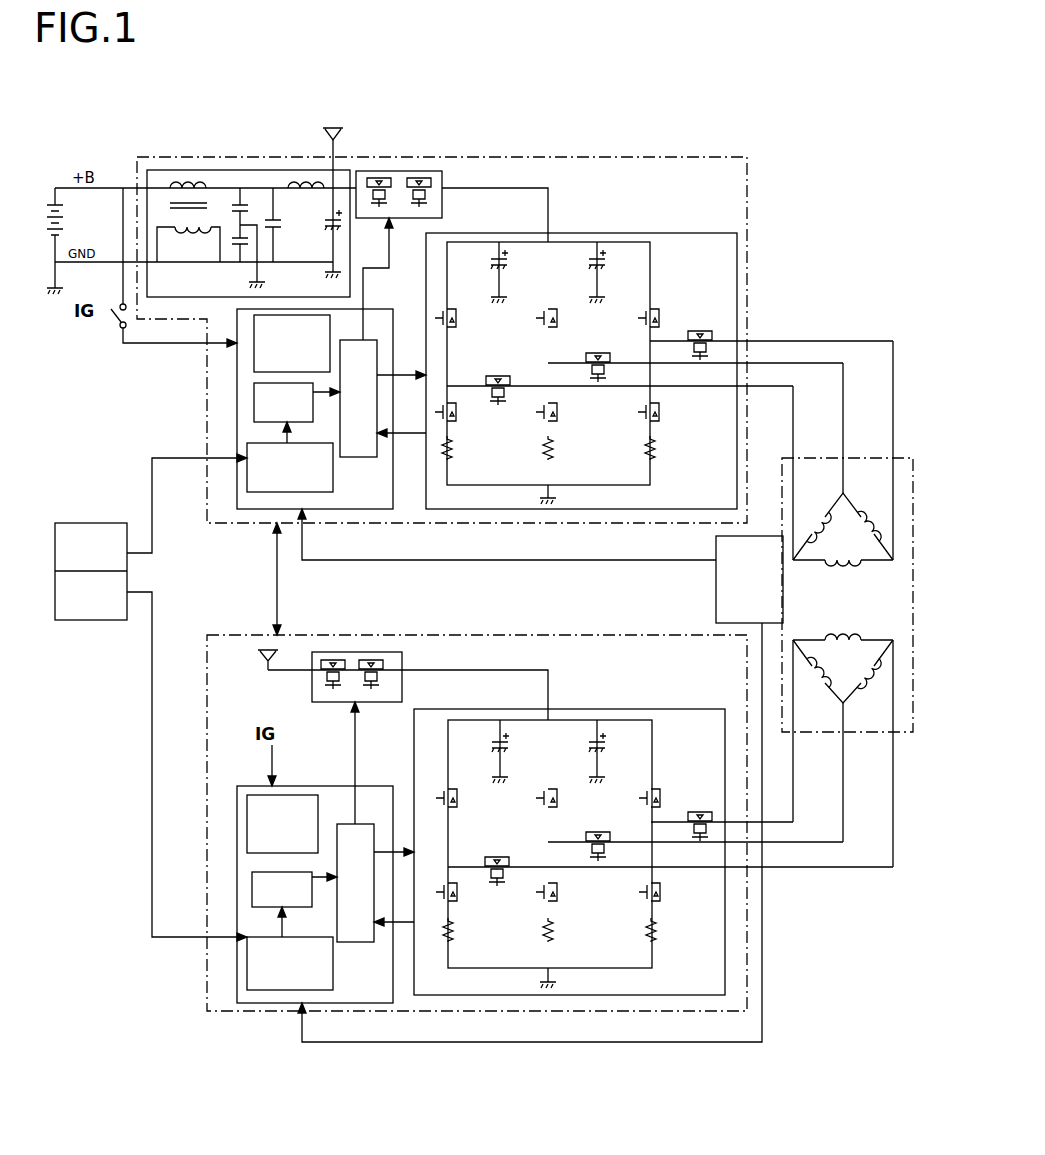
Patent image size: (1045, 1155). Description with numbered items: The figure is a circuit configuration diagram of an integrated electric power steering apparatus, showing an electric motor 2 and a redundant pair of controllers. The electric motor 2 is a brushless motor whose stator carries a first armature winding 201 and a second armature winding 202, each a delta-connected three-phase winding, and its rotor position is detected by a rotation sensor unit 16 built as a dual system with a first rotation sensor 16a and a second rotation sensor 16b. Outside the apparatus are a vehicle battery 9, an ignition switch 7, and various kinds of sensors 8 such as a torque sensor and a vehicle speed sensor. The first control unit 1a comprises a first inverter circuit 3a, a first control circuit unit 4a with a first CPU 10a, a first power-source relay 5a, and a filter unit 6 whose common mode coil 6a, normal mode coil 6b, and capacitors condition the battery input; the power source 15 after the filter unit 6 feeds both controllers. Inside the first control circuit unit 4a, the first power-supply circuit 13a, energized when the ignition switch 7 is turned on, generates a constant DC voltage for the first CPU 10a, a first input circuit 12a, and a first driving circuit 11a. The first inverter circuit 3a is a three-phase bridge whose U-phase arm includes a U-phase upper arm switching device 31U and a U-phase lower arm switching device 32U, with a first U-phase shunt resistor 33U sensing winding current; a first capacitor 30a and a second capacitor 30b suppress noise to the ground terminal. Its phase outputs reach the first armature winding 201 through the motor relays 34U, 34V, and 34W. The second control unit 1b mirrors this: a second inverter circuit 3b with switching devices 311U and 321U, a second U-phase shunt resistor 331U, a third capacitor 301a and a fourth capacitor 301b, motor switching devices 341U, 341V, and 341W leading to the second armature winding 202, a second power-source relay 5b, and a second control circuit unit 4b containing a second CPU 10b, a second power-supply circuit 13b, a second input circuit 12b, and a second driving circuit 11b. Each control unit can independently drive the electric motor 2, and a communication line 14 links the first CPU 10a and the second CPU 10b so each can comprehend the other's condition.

The first control unit 1a is at (565, 157).
The second control unit 1b is at (600, 1011).
The electric motor 2 is at (864, 604).
The first armature winding 201 is at (897, 492).
The second armature winding 202 is at (903, 668).
The first inverter circuit 3a is at (659, 352).
The second inverter circuit 3b is at (653, 787).
The first control circuit unit 4a is at (269, 446).
The second control circuit unit 4b is at (259, 910).
The first power-source relay 5a is at (385, 171).
The second power-source relay 5b is at (340, 652).
The filter unit 6 is at (248, 190).
The common mode coil 6a is at (185, 183).
The normal mode coil 6b is at (300, 184).
The ignition switch 7 is at (118, 326).
The various kinds of sensors 8 is at (90, 620).
The battery 9 is at (55, 205).
The first CPU 10a is at (254, 390).
The second CPU 10b is at (260, 872).
The first driving circuit 11a is at (352, 457).
The second driving circuit 11b is at (350, 942).
The first input circuit 12a is at (247, 480).
The second input circuit 12b is at (255, 940).
The first power-supply circuit 13a is at (254, 345).
The second power-supply circuit 13b is at (308, 795).
The communication line 14 is at (275, 590).
The power source 15 is at (335, 128).
The rotation sensor unit 16 is at (726, 624).
The first rotation sensor 16a is at (716, 562).
The second rotation sensor 16b is at (716, 600).
The first capacitor 30a is at (505, 255).
The second capacitor 30b is at (600, 255).
The U-phase upper arm switching device 31U is at (450, 310).
The U-phase lower arm switching device 32U is at (456, 422).
The first U-phase shunt resistor 33U is at (457, 458).
The U-phase first motor switching device 34U is at (498, 376).
The V-phase first motor switching device 34V is at (598, 353).
The W-phase first motor switching device 34W is at (700, 331).
The third capacitor 301a is at (492, 745).
The fourth capacitor 301b is at (605, 748).
The U-phase upper arm switching device 311U is at (458, 797).
The U-phase lower arm switching device 321U is at (458, 893).
The second U-phase shunt resistor 331U is at (457, 932).
The U-phase second motor switching device 341U is at (506, 857).
The V-phase second motor switching device 341V is at (608, 838).
The W-phase second motor switching device 341W is at (700, 812).